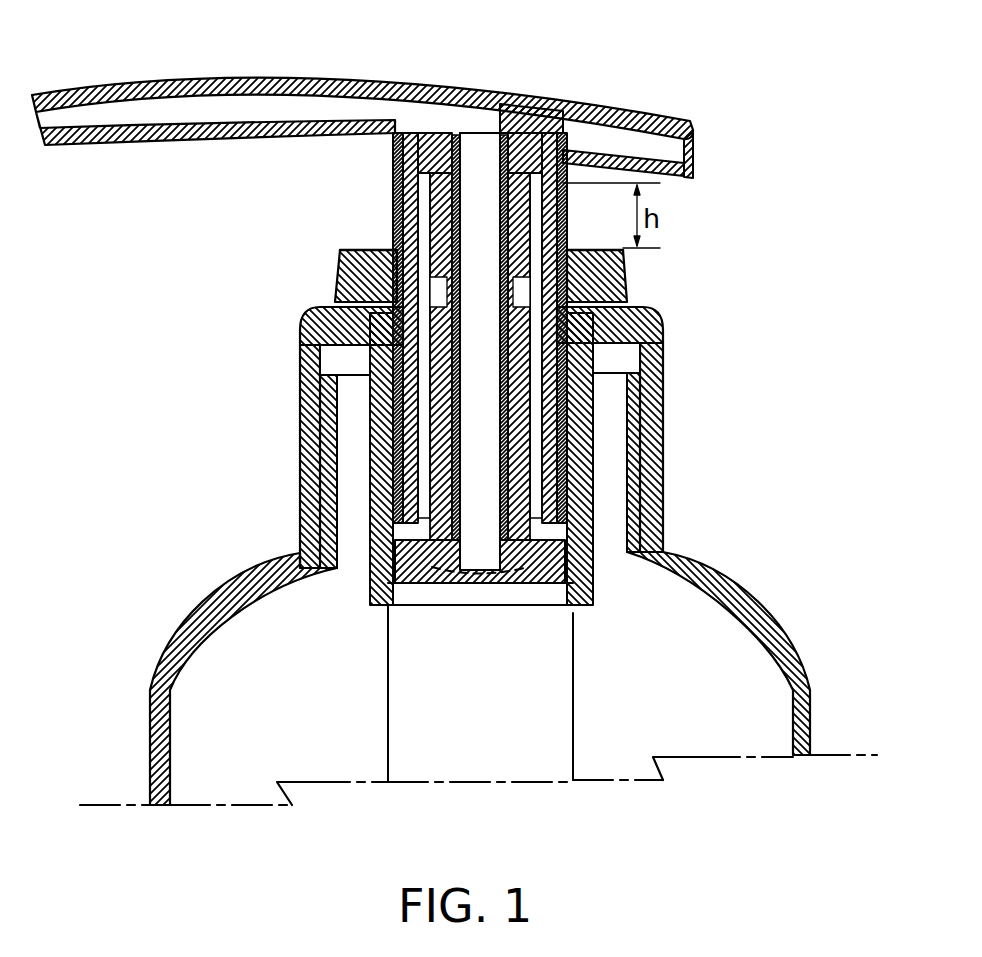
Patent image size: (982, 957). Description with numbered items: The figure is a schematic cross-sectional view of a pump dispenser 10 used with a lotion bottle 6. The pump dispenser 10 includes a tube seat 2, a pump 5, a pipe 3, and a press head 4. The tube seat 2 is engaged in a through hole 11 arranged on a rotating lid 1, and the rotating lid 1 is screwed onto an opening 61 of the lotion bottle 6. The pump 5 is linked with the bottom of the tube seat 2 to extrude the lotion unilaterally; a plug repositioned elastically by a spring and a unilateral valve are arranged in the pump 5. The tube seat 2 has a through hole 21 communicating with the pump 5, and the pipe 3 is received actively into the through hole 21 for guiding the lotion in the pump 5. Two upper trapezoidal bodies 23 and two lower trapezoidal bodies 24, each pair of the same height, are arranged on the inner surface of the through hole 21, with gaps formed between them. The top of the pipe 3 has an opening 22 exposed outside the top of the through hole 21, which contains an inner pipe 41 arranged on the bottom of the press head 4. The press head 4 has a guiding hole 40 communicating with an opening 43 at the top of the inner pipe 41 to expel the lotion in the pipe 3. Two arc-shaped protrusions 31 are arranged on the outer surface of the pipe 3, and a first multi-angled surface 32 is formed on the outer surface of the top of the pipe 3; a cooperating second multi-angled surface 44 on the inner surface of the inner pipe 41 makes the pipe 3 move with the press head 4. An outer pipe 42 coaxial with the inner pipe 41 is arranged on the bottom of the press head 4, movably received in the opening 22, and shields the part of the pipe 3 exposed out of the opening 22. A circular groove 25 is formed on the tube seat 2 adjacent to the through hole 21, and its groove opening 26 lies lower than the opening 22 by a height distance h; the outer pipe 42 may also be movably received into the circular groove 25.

The rotating lid 1 is at (488, 456).
The tube seat 2 is at (345, 288).
The pipe 3 is at (443, 375).
The press head 4 is at (362, 95).
The pump 5 is at (548, 678).
The lotion bottle 6 is at (205, 610).
The pump dispenser 10 is at (757, 272).
The through hole 11 is at (612, 352).
The through hole 21 is at (540, 440).
The opening 22 is at (548, 160).
The upper trapezoidal bodies 23 is at (600, 290).
The lower trapezoidal bodies 24 is at (412, 562).
The circular groove 25 is at (393, 430).
The groove opening 26 is at (395, 248).
The arc-shaped protrusions 31 is at (420, 588).
The first multi-angled surface 32 is at (437, 150).
The guiding hole 40 is at (248, 108).
The inner pipe 41 is at (398, 178).
The outer pipe 42 is at (405, 218).
The opening 43 is at (478, 135).
The second multi-angled surface 44 is at (502, 160).
The opening 61 is at (298, 495).